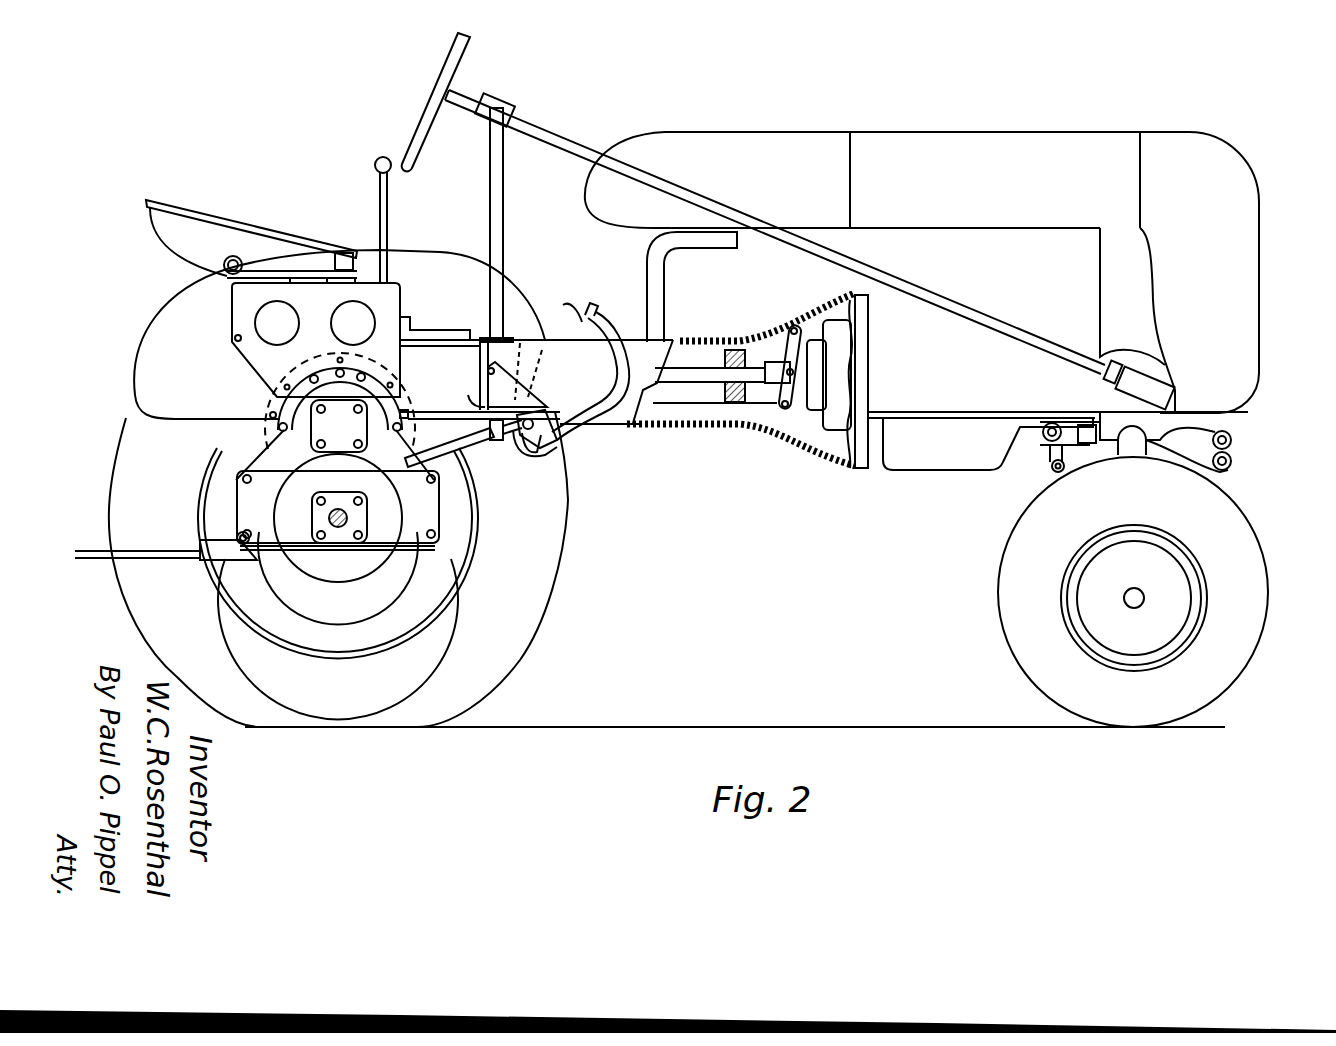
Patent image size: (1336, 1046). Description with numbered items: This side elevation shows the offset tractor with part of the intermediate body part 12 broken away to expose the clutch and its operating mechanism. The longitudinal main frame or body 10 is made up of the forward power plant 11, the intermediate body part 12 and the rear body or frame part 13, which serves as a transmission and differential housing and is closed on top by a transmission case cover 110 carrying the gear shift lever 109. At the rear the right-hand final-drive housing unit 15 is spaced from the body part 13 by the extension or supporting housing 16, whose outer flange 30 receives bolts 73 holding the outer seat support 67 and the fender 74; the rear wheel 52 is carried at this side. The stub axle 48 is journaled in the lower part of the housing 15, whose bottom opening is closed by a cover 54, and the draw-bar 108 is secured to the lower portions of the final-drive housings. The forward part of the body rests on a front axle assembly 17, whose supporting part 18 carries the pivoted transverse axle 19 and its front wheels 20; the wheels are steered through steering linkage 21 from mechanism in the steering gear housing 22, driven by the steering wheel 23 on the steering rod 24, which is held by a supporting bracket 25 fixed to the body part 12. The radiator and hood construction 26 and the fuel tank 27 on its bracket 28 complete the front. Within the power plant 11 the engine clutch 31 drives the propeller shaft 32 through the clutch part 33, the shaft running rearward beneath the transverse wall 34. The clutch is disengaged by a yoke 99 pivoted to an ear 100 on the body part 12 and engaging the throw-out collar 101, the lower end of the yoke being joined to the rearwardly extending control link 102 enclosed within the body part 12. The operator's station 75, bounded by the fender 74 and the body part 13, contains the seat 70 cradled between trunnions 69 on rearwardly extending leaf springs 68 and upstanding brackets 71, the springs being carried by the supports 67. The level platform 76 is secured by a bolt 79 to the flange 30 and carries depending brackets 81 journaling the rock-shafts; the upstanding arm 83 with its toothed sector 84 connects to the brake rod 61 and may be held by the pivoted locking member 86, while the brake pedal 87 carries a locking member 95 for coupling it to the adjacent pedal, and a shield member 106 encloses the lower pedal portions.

The main frame or body 10 is at (776, 403).
The power plant 11 is at (968, 407).
The intermediate body part 12 is at (675, 428).
The rear body or frame part 13 is at (457, 340).
The final-drive housing unit 15 is at (265, 495).
The extension or supporting housing 16 is at (409, 402).
The front axle assembly 17 is at (1181, 458).
The supporting part 18 is at (1078, 412).
The transverse axle 19 is at (1121, 452).
The front wheels 20 is at (1256, 570).
The steering linkage 21 is at (1232, 440).
The steering gear housing 22 is at (1165, 365).
The steering wheel 23 is at (472, 38).
The steering rod 24 is at (951, 302).
The supporting bracket 25 is at (505, 180).
The radiator and hood construction 26 is at (1054, 272).
The fuel tank 27 is at (842, 180).
The bracket 28 is at (666, 275).
The outer flange 30 is at (277, 395).
The engine clutch 31 is at (841, 427).
The propeller shaft 32 is at (691, 366).
The clutch part 33 is at (780, 400).
The transverse wall 34 is at (732, 350).
The stub axle 48 is at (338, 528).
The rear wheel 52 is at (556, 580).
The cover 54 is at (295, 582).
The brake rod 61 is at (465, 450).
The supports 67 is at (236, 308).
The leaf springs 68 is at (197, 282).
The trunnion 69 is at (239, 256).
The operator's seat 70 is at (173, 205).
The upstanding bracket 71 is at (346, 250).
The bolts 73 is at (344, 360).
The fender 74 is at (150, 338).
The operator's station 75 is at (214, 396).
The platform 76 is at (457, 408).
The bolt 79 is at (404, 420).
The brackets or bearings 81 is at (534, 417).
The upstanding arm 83 is at (545, 466).
The sector 84 is at (520, 371).
The locking member 86 is at (500, 374).
The brake pedal 87 is at (564, 299).
The locking member 95 is at (598, 304).
The yoke 99 is at (795, 328).
The ear 100 is at (826, 318).
The throw-out collar 101 is at (806, 367).
The control link 102 is at (749, 410).
The shield member 106 is at (560, 443).
The draw-bar 108 is at (143, 550).
The gear shift lever 109 is at (394, 195).
The transmission case cover 110 is at (413, 325).